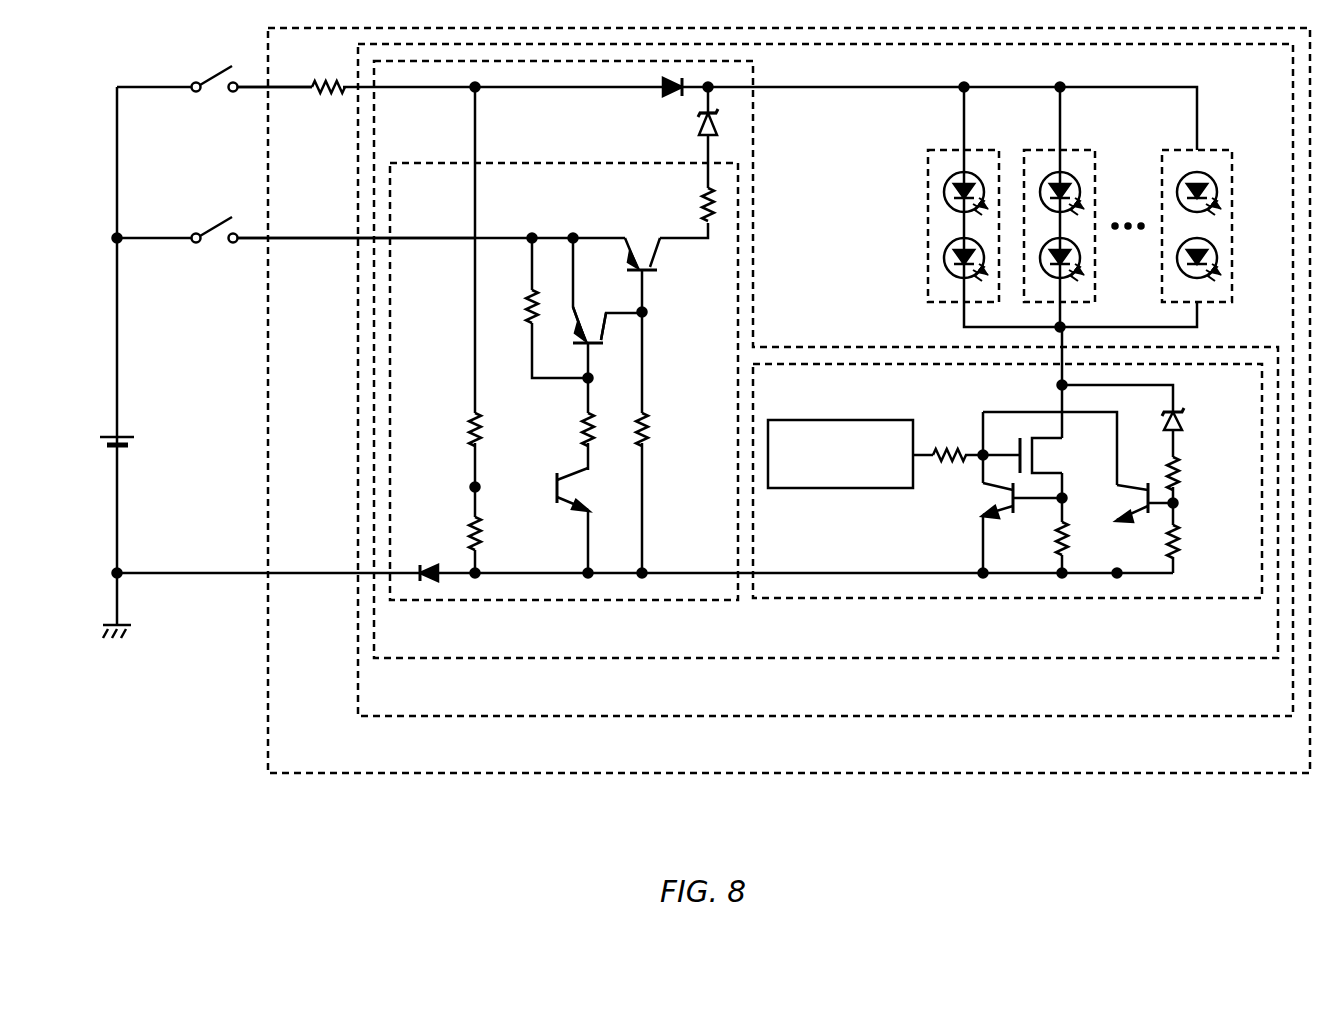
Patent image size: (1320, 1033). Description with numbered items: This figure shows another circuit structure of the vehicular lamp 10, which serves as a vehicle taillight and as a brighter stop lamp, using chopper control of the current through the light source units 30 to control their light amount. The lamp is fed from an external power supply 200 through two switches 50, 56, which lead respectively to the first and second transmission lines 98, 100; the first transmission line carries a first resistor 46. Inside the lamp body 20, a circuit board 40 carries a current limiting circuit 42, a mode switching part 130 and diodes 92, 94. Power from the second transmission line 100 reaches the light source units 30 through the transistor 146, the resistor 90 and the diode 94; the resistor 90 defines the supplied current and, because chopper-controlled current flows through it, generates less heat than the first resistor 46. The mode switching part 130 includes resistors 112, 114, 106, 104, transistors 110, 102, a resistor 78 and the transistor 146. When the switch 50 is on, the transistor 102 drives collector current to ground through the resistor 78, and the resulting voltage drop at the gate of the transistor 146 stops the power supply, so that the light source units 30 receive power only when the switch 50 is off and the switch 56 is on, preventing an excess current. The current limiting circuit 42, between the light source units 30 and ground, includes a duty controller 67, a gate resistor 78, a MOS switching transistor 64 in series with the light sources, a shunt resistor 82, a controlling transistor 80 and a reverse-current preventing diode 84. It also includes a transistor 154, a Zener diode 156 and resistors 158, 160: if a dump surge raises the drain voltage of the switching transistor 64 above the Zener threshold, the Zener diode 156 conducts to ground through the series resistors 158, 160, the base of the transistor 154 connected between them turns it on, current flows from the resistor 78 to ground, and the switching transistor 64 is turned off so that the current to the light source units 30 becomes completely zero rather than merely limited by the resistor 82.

The vehicular lamp 10 is at (814, 774).
The lamp body 20 is at (814, 717).
The light source unit 30 is at (1218, 150).
The circuit board 40 is at (814, 659).
The current limiting circuit 42 is at (976, 599).
The first resistor 46 is at (328, 86).
The switch 50 is at (214, 100).
The switch 56 is at (210, 216).
The switching transistor 64 is at (1070, 450).
The duty controller 67 is at (846, 420).
The gate resistor 78 is at (946, 450).
The controlling transistor 80 is at (982, 500).
The shunt resistor 82 is at (1056, 540).
The diode 84 is at (430, 564).
The resistor 90 is at (700, 200).
The diode 92 is at (660, 91).
The diode 94 is at (698, 124).
The first transmission line 98 is at (292, 89).
The second transmission line 100 is at (316, 240).
The transistor 102 is at (586, 320).
The resistor 104 is at (584, 412).
The resistor 106 is at (527, 318).
The transistor 110 is at (568, 468).
The resistor 112 is at (468, 425).
The resistor 114 is at (482, 534).
The mode switching part 130 is at (542, 601).
The transistor 146 is at (634, 260).
The transistor 154 is at (1128, 480).
The Zener diode 156 is at (1182, 422).
The resistor 158 is at (1182, 466).
The resistor 160 is at (1182, 532).
The power supply 200 is at (128, 435).